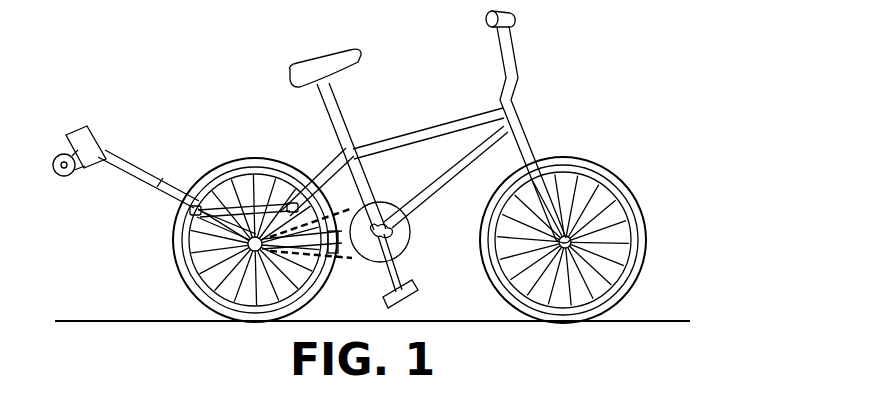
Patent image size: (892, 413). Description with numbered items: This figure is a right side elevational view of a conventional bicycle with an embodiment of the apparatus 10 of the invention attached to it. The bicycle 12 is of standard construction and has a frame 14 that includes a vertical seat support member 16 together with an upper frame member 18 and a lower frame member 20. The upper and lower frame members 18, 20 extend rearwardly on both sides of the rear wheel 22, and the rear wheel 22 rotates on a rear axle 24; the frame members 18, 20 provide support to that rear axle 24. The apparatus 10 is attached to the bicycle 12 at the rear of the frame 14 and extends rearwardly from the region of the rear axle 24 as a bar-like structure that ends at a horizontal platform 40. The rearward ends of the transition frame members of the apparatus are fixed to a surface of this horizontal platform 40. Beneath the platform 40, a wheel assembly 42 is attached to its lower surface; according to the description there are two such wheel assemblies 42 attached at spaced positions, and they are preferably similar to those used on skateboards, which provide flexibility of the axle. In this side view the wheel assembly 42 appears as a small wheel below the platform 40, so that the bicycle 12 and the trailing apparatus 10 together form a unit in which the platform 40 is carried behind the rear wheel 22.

The apparatus 10 is at (150, 178).
The bicycle 12 is at (535, 131).
The frame 14 is at (447, 121).
The vertical seat support member 16 is at (322, 108).
The upper frame member 18 is at (323, 167).
The lower frame member 20 is at (348, 258).
The rear wheel 22 is at (173, 245).
The rear axle 24 is at (205, 252).
The horizontal platform 40 is at (85, 140).
The wheel assembly 42 is at (67, 177).